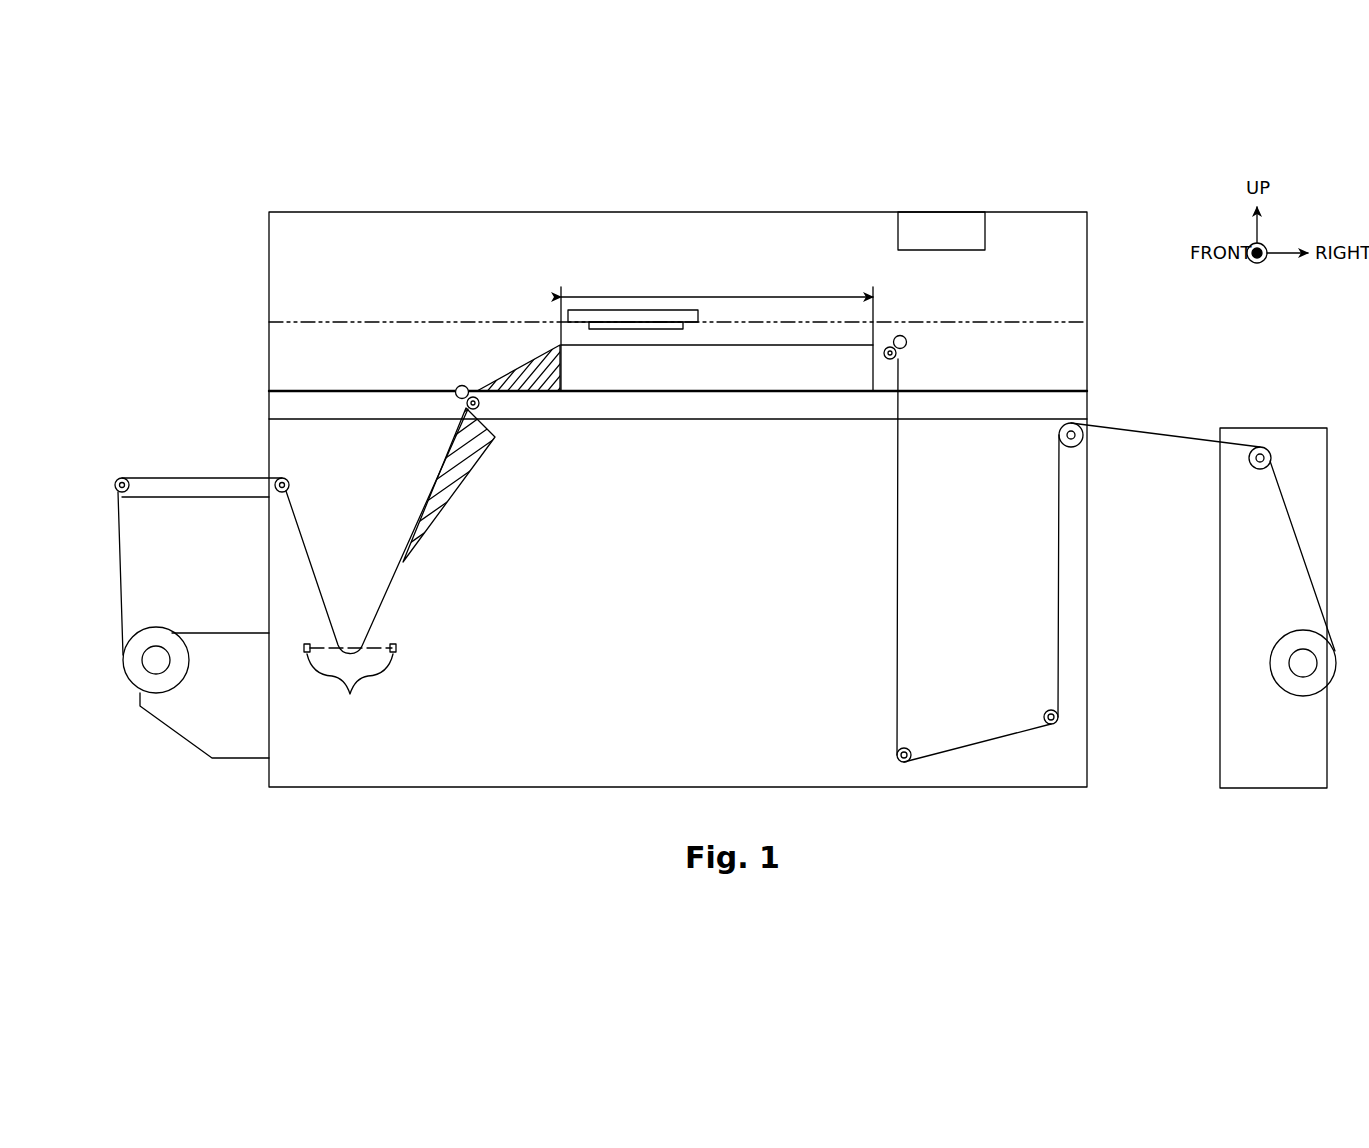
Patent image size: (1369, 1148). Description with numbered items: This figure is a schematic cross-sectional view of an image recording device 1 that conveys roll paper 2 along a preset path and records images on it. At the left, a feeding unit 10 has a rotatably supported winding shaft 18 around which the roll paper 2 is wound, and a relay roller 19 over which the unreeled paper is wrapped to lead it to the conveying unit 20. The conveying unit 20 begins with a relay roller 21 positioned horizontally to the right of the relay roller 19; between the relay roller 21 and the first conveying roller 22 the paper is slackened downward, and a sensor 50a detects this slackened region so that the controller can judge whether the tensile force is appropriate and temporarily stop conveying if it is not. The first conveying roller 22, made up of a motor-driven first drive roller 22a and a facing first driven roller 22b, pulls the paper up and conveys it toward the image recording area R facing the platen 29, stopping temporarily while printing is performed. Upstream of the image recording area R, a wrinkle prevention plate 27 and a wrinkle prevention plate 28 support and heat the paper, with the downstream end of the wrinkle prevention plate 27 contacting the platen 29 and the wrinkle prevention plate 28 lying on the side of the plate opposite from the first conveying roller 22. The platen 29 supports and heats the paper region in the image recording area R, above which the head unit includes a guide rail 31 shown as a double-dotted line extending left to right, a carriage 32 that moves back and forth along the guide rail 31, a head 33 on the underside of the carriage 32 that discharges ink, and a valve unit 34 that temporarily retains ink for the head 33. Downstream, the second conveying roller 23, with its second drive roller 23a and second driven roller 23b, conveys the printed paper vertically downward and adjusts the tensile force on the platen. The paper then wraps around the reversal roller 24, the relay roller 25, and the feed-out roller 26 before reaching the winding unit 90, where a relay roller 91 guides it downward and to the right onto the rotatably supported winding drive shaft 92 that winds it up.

The image recording device 1 is at (1083, 168).
The roll paper 2 is at (118, 520).
The feeding unit 10 is at (147, 405).
The winding shaft 18 is at (142, 664).
The relay roller 19 is at (120, 479).
The conveying unit 20 is at (848, 612).
The relay roller 21 is at (290, 479).
The first conveying roller 22 is at (402, 373).
The first drive roller 22a is at (467, 404).
The first driven roller 22b is at (458, 386).
The second conveying roller 23 is at (955, 358).
The second drive roller 23a is at (892, 359).
The second driven roller 23b is at (907, 342).
The reversal roller 24 is at (906, 748).
The relay roller 25 is at (1046, 711).
The feed-out roller 26 is at (1060, 430).
The wrinkle prevention plate 27 is at (462, 482).
The wrinkle prevention plate 28 is at (541, 385).
The platen 29 is at (615, 375).
The guide rail 31 is at (988, 322).
The carriage 32 is at (587, 310).
The head 33 is at (680, 329).
The valve unit 34 is at (942, 222).
The sensor 50a is at (350, 688).
The winding unit 90 is at (1278, 388).
The relay roller 91 is at (1249, 460).
The winding drive shaft 92 is at (1293, 698).
The image recording area R is at (748, 297).